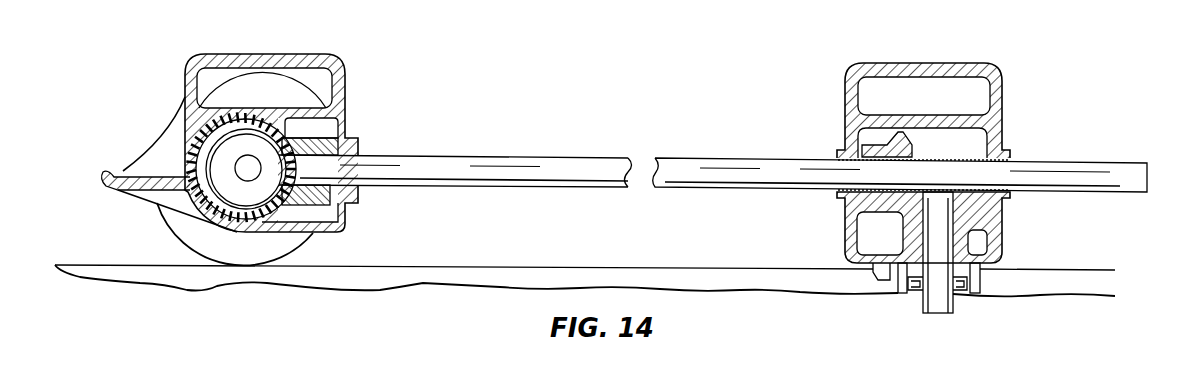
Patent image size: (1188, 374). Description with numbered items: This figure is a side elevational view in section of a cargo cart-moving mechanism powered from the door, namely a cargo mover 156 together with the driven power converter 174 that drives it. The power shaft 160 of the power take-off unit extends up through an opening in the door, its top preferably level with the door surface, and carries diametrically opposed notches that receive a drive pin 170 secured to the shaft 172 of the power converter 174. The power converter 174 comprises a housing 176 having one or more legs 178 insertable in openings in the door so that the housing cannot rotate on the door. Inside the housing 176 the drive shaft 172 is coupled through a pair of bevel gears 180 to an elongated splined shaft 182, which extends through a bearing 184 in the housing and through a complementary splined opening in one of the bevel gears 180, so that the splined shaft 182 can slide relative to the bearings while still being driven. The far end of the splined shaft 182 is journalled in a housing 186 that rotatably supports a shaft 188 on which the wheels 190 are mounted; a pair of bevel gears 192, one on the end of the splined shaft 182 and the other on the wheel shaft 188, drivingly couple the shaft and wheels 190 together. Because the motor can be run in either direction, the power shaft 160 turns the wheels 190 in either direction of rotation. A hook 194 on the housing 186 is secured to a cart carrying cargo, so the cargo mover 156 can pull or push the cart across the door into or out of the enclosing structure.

The cargo mover 156 is at (352, 76).
The housing 186 is at (340, 91).
The shaft 188 is at (242, 163).
The wheels 190 is at (170, 122).
The bevel gears 192 is at (320, 135).
The hook 194 is at (103, 178).
The power converter 174 is at (1009, 87).
The housing 176 is at (995, 118).
The bearing 184 is at (838, 152).
The splined shaft 182 is at (1080, 172).
The bevel gears 180 is at (877, 207).
The legs 178 is at (880, 281).
The drive pin 170 is at (918, 289).
The shaft 172 is at (938, 312).
The power shaft 160 is at (960, 292).